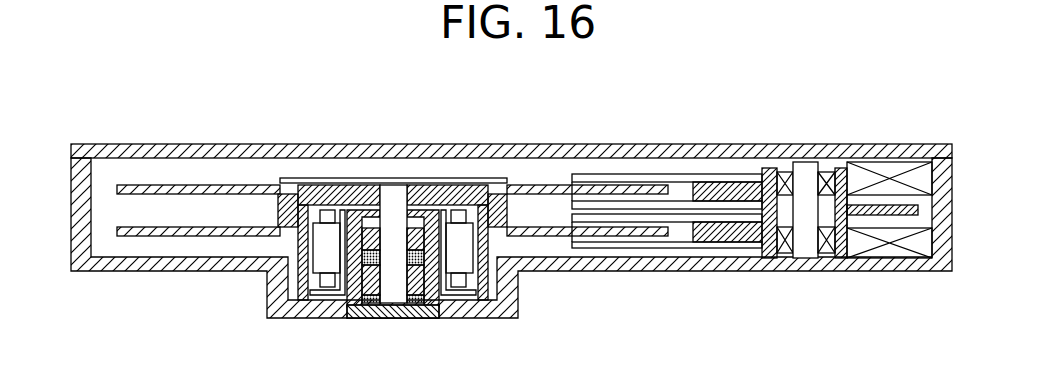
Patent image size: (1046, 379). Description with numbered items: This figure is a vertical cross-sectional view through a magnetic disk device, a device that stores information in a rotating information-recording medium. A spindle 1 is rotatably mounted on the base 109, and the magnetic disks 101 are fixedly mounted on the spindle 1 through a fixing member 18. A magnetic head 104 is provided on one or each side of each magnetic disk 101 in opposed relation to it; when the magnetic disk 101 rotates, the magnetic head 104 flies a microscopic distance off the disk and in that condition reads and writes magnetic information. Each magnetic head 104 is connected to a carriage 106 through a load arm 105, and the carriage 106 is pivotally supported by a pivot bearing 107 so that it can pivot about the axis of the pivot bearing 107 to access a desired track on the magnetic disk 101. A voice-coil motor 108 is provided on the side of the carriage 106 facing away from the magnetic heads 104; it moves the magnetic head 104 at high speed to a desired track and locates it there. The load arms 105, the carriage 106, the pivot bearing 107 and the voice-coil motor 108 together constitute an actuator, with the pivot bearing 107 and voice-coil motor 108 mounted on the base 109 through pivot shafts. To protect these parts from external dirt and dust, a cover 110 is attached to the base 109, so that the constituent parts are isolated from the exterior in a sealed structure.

The spindle 1 is at (391, 297).
The fixing member 18 is at (465, 182).
The magnetic disk 101 is at (247, 229).
The magnetic head 104 is at (582, 181).
The load arm 105 is at (667, 180).
The carriage 106 is at (753, 244).
The pivot bearing 107 is at (827, 252).
The voice-coil motor 108 is at (866, 206).
The base 109 is at (203, 272).
The cover 110 is at (350, 152).